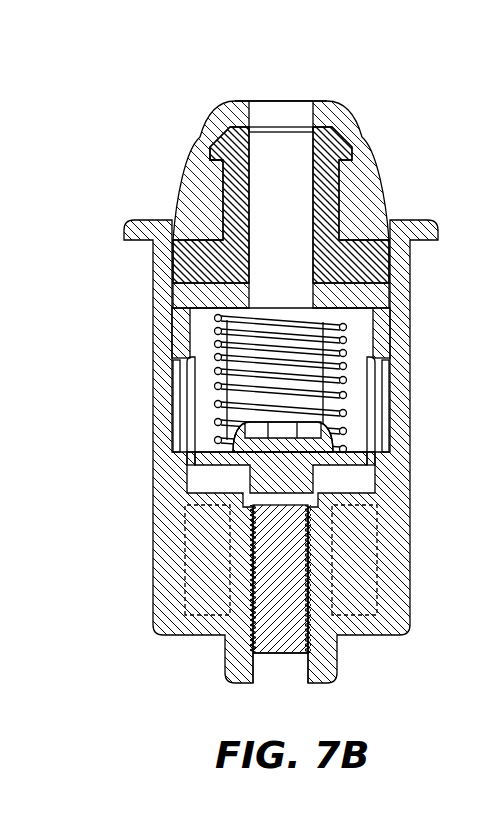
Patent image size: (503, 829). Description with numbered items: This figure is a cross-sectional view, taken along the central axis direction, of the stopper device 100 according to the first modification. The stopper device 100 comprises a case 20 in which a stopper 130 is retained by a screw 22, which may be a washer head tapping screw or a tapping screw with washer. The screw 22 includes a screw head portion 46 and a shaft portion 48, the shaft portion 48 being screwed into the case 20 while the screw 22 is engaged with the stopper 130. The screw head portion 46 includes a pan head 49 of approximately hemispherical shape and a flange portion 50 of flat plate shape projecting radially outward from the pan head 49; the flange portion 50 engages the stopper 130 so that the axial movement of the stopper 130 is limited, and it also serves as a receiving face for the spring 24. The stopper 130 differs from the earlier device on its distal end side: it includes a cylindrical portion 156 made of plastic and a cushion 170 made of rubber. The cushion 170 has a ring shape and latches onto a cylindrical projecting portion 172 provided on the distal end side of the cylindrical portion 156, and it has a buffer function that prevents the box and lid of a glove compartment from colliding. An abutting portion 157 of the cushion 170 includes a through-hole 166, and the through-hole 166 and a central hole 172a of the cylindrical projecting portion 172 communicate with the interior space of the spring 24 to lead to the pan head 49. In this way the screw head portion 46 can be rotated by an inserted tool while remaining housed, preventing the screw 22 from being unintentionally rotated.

The case 20 is at (172, 522).
The screw 22 is at (278, 512).
The spring 24 is at (343, 380).
The screw head portion 46 is at (340, 450).
The shaft portion 48 is at (263, 588).
The pan head 49 is at (308, 430).
The flange portion 50 is at (186, 458).
The stopper device 100 is at (402, 692).
The stopper 130 is at (386, 326).
The cylindrical portion 156 is at (181, 328).
The abutting portion 157 is at (232, 100).
The through-hole 166 is at (297, 101).
The cushion 170 is at (348, 168).
The cylindrical projecting portion 172 is at (330, 190).
The central hole 172a is at (238, 183).